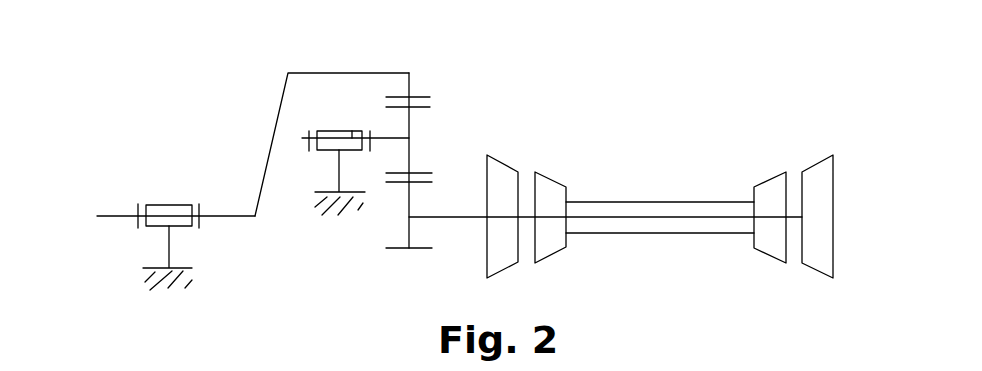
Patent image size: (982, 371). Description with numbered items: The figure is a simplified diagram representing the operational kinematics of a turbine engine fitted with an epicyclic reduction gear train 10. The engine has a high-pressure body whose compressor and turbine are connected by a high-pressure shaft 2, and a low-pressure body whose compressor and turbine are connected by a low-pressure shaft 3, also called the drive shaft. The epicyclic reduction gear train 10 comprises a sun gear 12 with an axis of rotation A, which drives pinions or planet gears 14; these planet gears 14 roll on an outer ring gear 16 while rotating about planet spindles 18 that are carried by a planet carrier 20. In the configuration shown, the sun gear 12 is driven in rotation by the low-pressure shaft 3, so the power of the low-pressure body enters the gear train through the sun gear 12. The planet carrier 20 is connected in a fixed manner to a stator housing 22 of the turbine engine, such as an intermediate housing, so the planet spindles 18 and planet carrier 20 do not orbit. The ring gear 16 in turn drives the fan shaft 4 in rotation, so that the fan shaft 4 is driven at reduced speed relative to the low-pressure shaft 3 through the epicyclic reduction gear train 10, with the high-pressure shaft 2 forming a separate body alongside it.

The high-pressure shaft 2 is at (607, 201).
The low-pressure shaft 3 is at (673, 218).
The fan shaft 4 is at (120, 213).
The epicyclic reduction gear train 10 is at (430, 127).
The sun gear 12 is at (409, 235).
The planet gears 14 is at (409, 159).
The outer ring gear 16 is at (410, 83).
The planet spindles 18 is at (350, 131).
The planet carrier 20 is at (328, 130).
The stator housing 22 is at (170, 243).